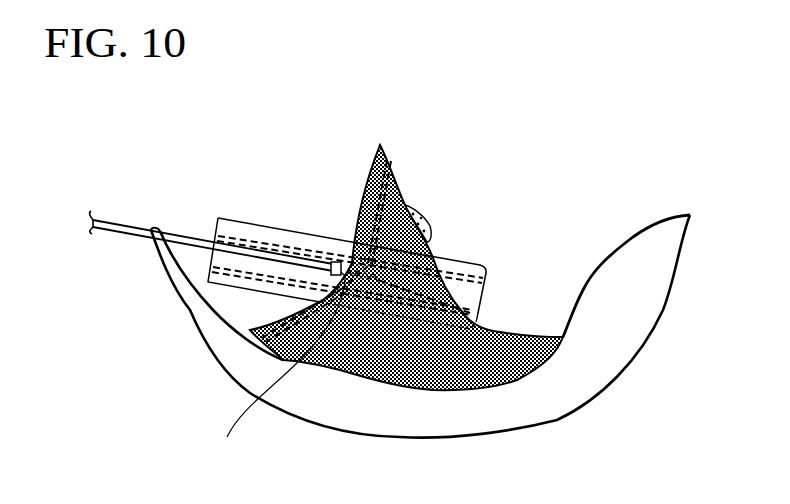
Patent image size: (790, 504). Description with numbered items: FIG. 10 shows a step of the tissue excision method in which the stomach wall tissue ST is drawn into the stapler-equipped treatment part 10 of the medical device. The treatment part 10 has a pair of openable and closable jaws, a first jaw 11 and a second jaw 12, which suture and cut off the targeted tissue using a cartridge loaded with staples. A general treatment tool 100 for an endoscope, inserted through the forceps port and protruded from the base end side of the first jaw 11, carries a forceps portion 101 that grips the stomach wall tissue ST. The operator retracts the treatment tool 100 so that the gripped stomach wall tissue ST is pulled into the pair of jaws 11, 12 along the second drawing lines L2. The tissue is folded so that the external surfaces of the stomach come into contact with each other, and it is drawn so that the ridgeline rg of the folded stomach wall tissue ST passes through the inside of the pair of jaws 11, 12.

The treatment tool 100 is at (198, 238).
The forceps portion 101 is at (274, 373).
The treatment part 10 is at (347, 232).
The first jaw 11 is at (350, 259).
The second jaw 12 is at (342, 291).
The stomach wall tissue ST is at (395, 180).
The ridgeline rg is at (407, 200).
The second drawing line L2 is at (423, 287).